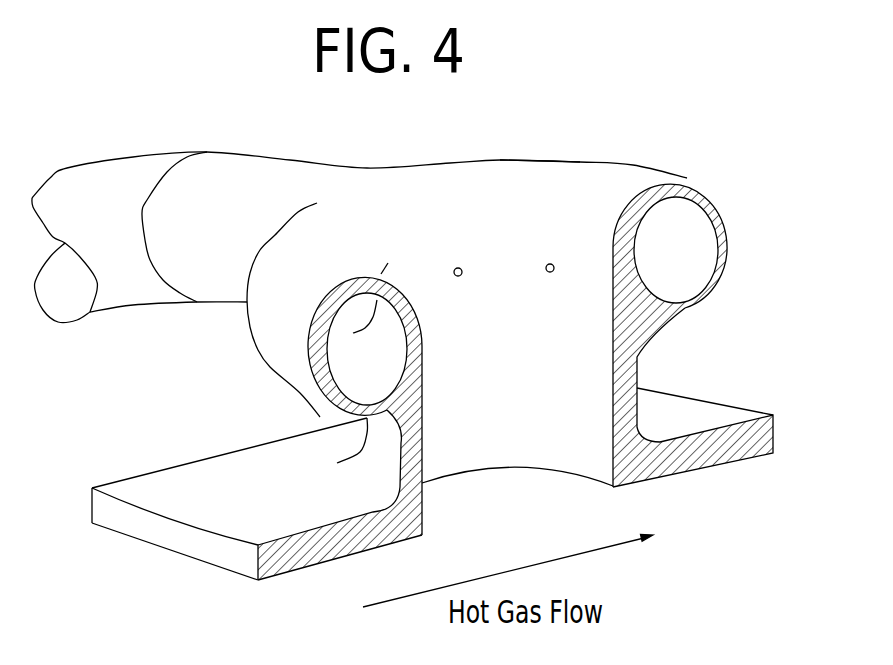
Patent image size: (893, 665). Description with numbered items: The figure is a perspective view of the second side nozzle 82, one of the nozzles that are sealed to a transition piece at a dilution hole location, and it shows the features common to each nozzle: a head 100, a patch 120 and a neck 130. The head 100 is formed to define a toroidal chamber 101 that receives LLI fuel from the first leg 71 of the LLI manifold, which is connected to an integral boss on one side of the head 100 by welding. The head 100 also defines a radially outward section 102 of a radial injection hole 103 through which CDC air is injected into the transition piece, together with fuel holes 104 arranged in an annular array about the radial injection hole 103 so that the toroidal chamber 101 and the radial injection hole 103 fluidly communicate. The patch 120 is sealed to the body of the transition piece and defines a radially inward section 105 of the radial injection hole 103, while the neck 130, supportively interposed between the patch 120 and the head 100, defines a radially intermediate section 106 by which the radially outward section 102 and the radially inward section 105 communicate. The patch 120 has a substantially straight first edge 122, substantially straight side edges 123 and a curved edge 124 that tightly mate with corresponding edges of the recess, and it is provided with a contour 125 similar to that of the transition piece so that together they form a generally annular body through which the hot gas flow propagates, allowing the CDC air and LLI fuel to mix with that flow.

The first leg 71 is at (127, 306).
The second side nozzle 82 is at (727, 176).
The head 100 is at (515, 185).
The toroidal chamber 101 is at (685, 258).
The radially outward section 102 is at (607, 290).
The radial injection hole 103 is at (614, 181).
The fuel holes 104 is at (547, 272).
The radially inward section 105 is at (543, 455).
The radially intermediate section 106 is at (562, 367).
The patch 120 is at (775, 430).
The first edge 122 is at (140, 533).
The side edges 123 is at (208, 458).
The curved edge 124 is at (730, 398).
The contour 125 is at (243, 577).
The neck 130 is at (640, 358).